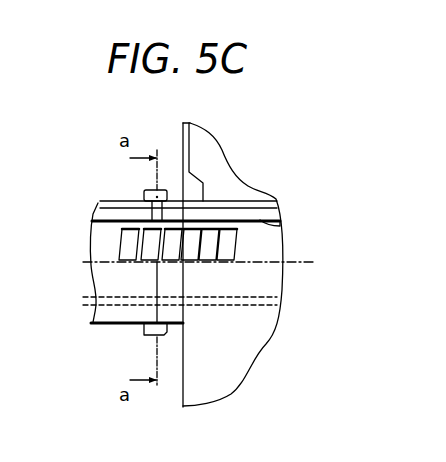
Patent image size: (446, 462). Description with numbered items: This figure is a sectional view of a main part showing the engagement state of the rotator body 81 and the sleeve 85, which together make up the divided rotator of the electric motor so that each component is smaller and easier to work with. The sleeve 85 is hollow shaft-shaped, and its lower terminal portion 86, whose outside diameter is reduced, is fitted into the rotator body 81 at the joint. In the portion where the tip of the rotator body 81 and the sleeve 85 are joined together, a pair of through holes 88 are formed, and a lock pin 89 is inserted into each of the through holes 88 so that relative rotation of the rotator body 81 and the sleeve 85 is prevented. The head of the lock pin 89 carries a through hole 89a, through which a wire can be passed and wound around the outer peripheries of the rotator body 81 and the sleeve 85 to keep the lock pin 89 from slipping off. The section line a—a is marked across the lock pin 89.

The rotator body 81 is at (242, 207).
The sleeve 85 is at (97, 212).
The lower terminal portion 86 is at (279, 226).
The through holes 88 is at (99, 203).
The lock pin 89 is at (157, 189).
The through hole 89a is at (148, 194).